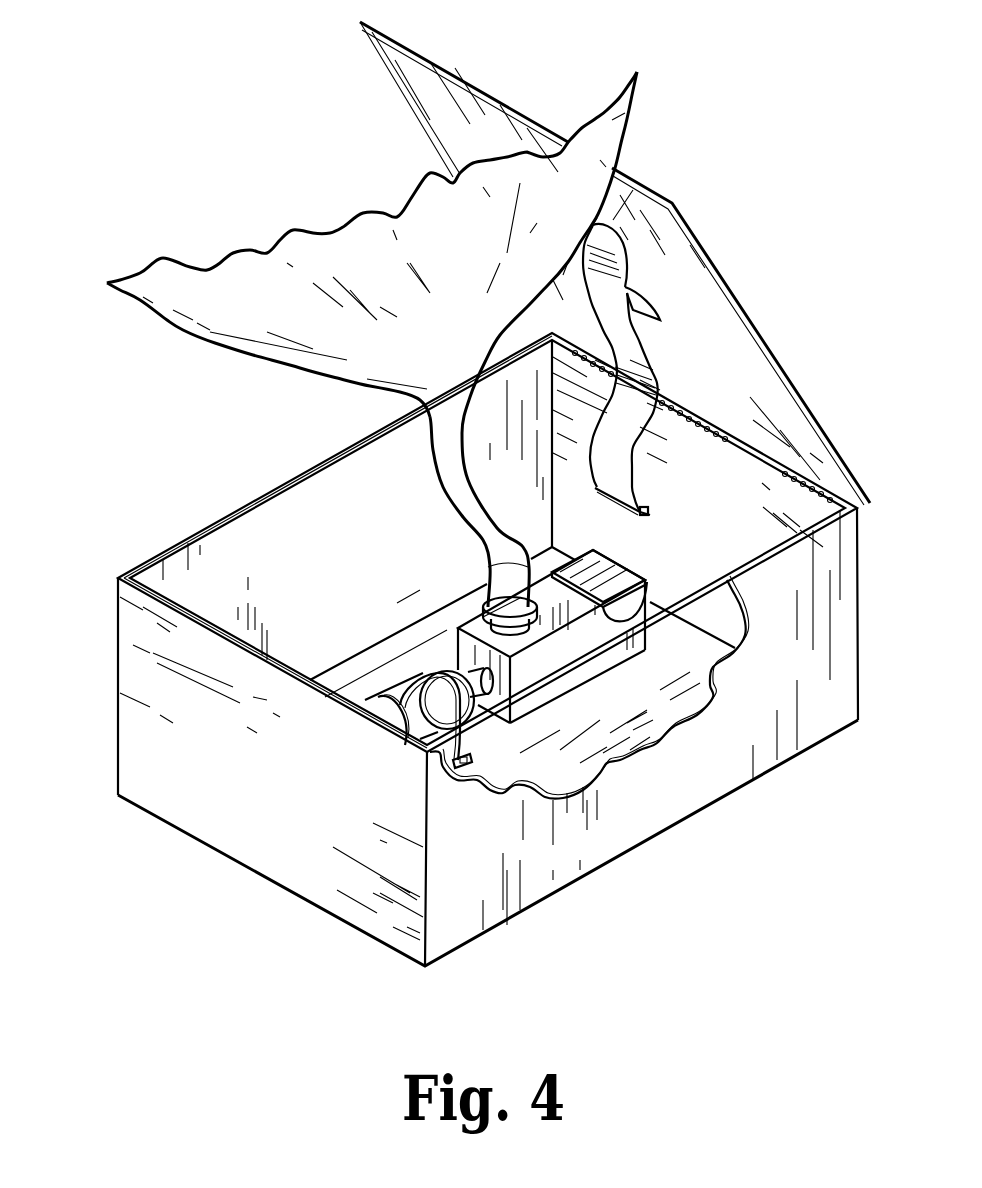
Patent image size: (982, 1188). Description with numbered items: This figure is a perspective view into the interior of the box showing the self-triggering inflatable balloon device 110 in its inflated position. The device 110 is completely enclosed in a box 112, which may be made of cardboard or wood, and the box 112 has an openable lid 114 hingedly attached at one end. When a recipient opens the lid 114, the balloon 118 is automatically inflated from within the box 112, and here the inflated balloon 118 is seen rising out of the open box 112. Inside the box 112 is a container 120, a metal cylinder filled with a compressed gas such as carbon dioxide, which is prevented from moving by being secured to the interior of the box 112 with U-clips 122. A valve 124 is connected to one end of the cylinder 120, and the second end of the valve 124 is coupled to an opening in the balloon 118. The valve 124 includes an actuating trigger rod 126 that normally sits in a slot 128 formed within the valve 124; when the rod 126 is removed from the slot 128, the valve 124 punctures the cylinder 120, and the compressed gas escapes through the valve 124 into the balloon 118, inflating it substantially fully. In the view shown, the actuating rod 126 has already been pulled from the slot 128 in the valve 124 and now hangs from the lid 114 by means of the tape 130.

The self-triggering inflatable balloon device 110 is at (176, 1003).
The box 112 is at (541, 906).
The lid 114 is at (455, 73).
The balloon 118 is at (178, 333).
The container 120 is at (450, 670).
The U-clips 122 is at (466, 739).
The valve 124 is at (590, 552).
The actuating trigger rod 126 is at (652, 517).
The slot 128 is at (648, 577).
The tape 130 is at (636, 473).